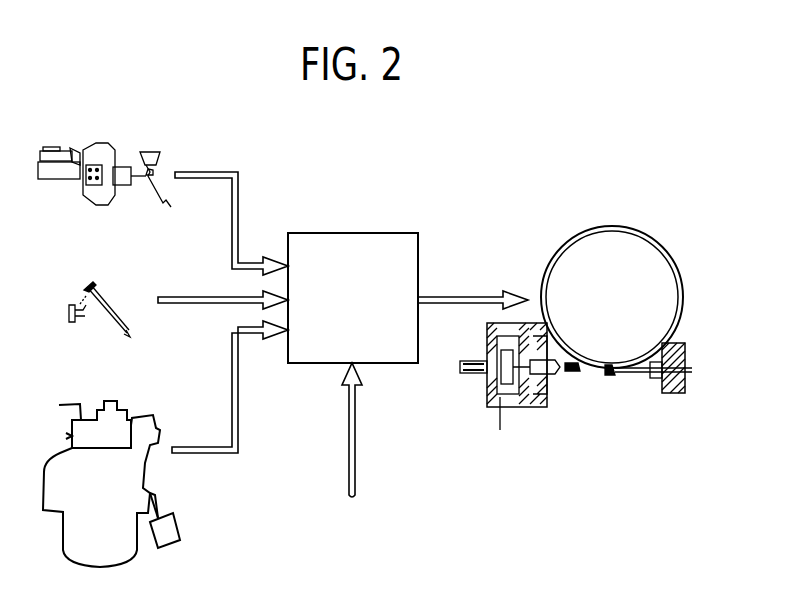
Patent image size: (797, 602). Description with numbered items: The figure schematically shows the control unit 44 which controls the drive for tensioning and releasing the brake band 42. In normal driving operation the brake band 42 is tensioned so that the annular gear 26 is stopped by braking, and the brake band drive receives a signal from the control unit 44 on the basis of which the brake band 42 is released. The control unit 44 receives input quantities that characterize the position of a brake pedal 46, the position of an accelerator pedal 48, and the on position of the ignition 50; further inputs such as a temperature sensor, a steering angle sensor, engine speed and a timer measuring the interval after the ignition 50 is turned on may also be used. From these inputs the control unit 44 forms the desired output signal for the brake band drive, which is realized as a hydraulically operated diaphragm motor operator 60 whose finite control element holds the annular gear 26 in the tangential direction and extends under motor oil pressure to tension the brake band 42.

The annular gear 26 is at (668, 290).
The brake band 42 is at (663, 243).
The control unit 44 is at (383, 236).
The brake pedal 46 is at (163, 180).
The accelerator pedal 48 is at (118, 305).
The ignition 50 is at (88, 393).
The diaphragm motor operator 60 is at (477, 385).